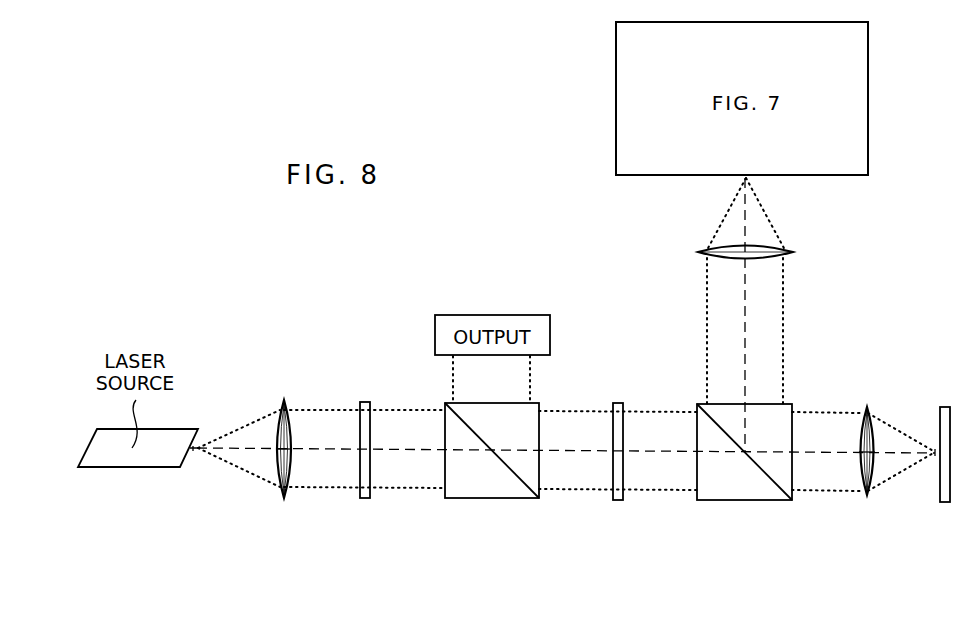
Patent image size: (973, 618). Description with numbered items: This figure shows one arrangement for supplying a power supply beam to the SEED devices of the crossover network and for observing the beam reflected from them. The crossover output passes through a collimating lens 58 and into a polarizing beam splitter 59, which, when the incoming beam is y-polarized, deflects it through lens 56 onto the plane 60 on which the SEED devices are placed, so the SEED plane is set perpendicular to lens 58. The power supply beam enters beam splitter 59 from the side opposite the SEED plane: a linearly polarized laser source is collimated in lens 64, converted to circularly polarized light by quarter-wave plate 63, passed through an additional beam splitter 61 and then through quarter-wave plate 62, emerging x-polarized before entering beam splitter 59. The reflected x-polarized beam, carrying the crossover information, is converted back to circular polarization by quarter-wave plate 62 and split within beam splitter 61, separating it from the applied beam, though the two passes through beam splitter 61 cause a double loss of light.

The lens 56 is at (865, 500).
The collimating lens 58 is at (710, 250).
The polarizing beam splitter 59 is at (735, 482).
The plane 60 is at (945, 412).
The beam splitter 61 is at (493, 480).
The quarter-wave plate 62 is at (619, 408).
The quarter-wave plate 63 is at (364, 405).
The lens 64 is at (283, 412).